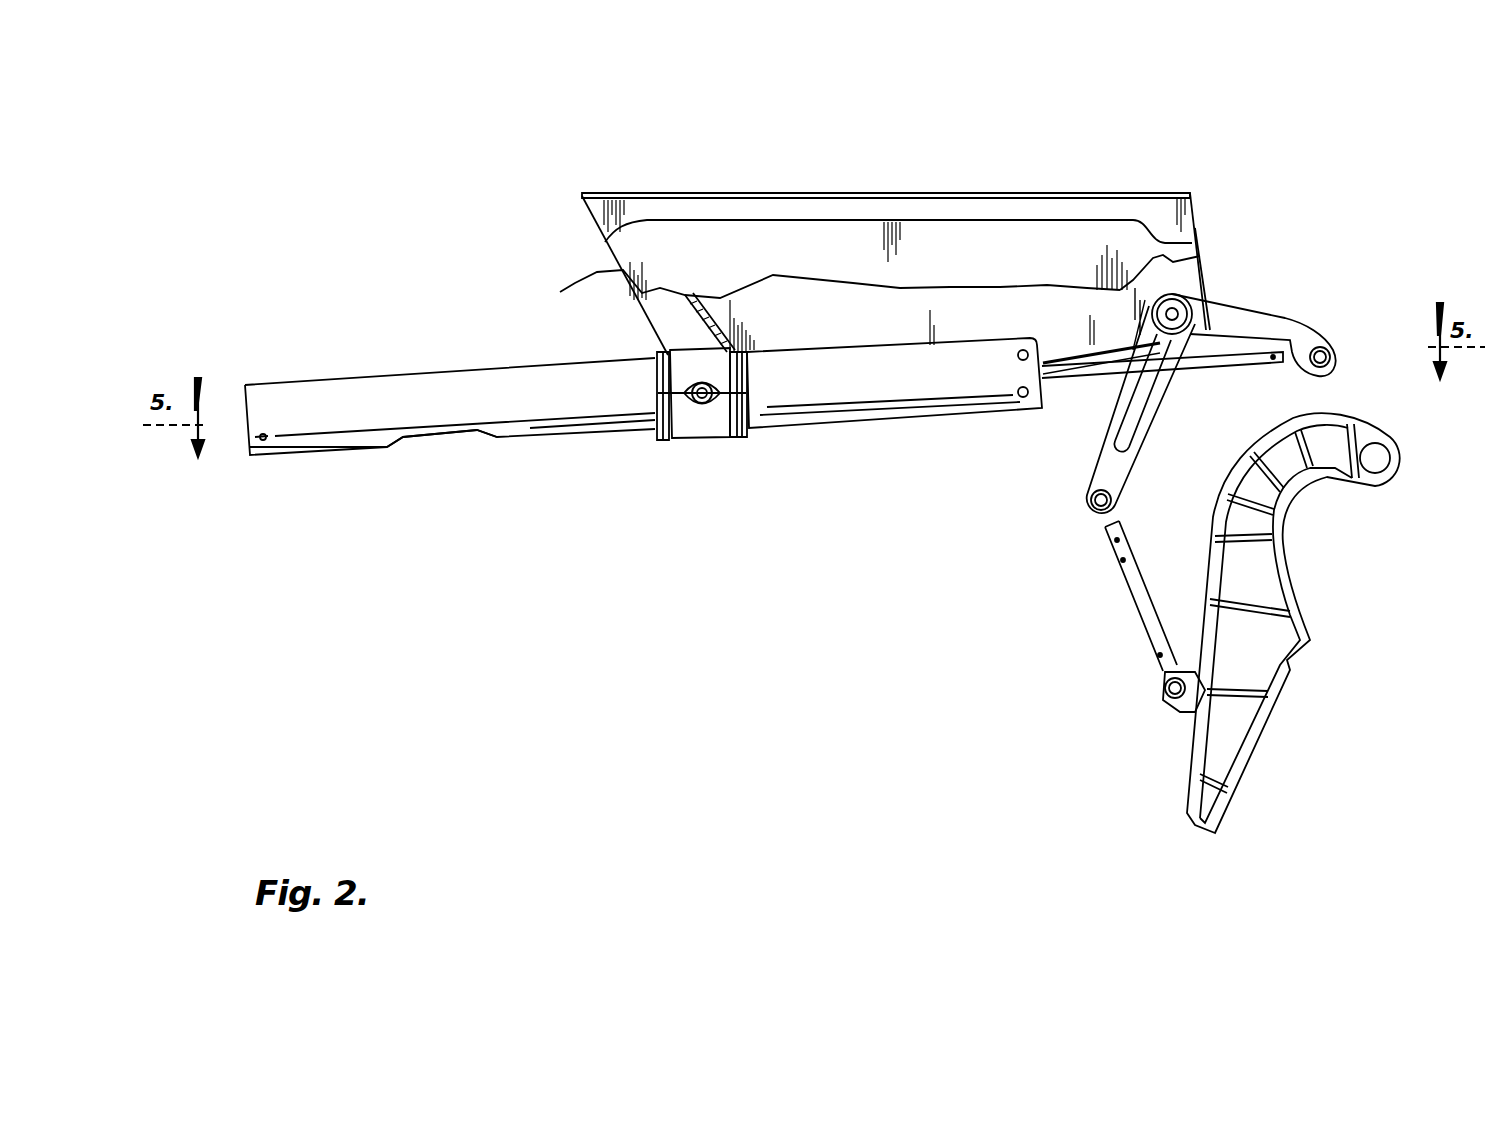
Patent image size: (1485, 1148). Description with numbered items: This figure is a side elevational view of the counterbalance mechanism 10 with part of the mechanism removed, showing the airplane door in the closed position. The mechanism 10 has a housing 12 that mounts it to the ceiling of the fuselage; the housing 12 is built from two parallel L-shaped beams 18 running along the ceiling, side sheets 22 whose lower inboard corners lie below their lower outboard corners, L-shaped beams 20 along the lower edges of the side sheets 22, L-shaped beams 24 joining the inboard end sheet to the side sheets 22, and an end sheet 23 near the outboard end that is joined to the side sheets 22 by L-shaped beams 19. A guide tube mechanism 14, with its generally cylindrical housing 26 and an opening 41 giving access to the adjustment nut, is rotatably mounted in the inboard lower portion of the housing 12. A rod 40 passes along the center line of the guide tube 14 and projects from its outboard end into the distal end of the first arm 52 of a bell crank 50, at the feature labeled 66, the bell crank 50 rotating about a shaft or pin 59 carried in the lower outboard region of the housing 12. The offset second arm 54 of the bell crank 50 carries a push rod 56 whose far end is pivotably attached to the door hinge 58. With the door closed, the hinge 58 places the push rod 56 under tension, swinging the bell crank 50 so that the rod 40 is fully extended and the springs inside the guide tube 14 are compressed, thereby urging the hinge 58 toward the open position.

The counterbalance mechanism 10 is at (1384, 140).
The housing 12 is at (878, 188).
The guide tube mechanism 14 is at (400, 368).
The beams 18 is at (993, 205).
The L-shaped beams 19 is at (1180, 278).
The L-shaped beams 20 is at (1100, 358).
The side sheets 22 is at (995, 263).
The end sheet 23 is at (1200, 240).
The L-shaped beams 24 is at (560, 292).
The cylindrical housing 26 is at (318, 425).
The rod 40 is at (1238, 378).
The opening 41 is at (445, 440).
The bell crank 50 is at (1090, 440).
The first arm 52 is at (1270, 318).
The second arm 54 is at (1090, 495).
The push rod 56 is at (1118, 595).
The hinge 58 is at (1195, 757).
The shaft or pin 59 is at (1200, 300).
The pivot hole 66 is at (1330, 348).